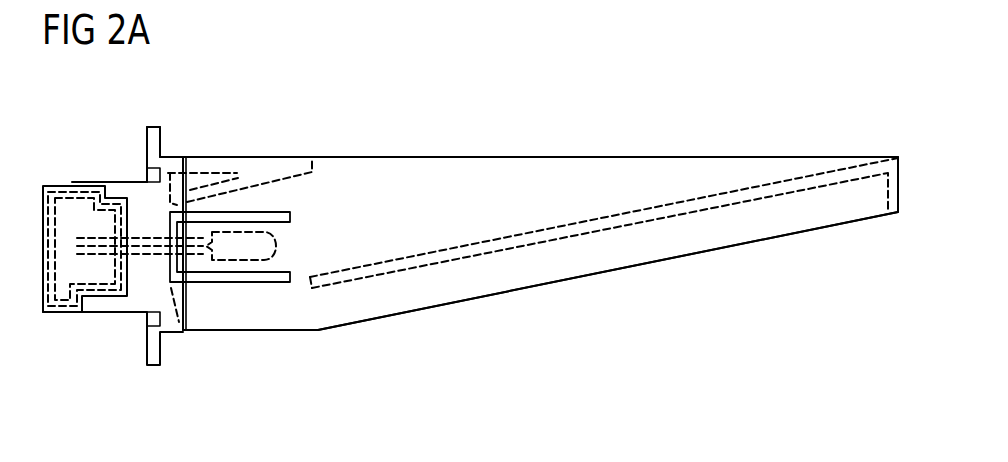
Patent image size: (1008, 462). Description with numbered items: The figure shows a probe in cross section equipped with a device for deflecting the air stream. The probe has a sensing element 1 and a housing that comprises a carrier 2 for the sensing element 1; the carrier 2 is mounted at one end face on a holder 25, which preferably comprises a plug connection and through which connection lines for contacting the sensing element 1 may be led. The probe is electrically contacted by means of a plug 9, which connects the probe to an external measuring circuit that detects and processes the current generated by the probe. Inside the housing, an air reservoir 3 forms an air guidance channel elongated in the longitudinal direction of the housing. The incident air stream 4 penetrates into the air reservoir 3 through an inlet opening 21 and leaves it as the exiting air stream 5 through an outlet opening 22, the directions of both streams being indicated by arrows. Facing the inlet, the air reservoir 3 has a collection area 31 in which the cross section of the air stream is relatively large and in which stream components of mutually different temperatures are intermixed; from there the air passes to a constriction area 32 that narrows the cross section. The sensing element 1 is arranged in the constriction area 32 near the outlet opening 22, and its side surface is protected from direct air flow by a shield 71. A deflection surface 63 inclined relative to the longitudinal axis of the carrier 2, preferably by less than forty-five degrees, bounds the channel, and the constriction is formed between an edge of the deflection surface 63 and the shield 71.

The sensing element 1 is at (262, 249).
The carrier 2 is at (658, 157).
The air reservoir 3 is at (398, 172).
The incident air stream 4 is at (443, 100).
The exiting air stream 5 is at (278, 317).
The plug 9 is at (67, 207).
The inlet opening 21 is at (574, 142).
The outlet opening 22 is at (308, 347).
The holder 25 is at (153, 130).
The collection area 31 is at (468, 170).
The constriction area 32 is at (309, 254).
The deflection surface 63 is at (635, 222).
The shield 71 is at (261, 168).